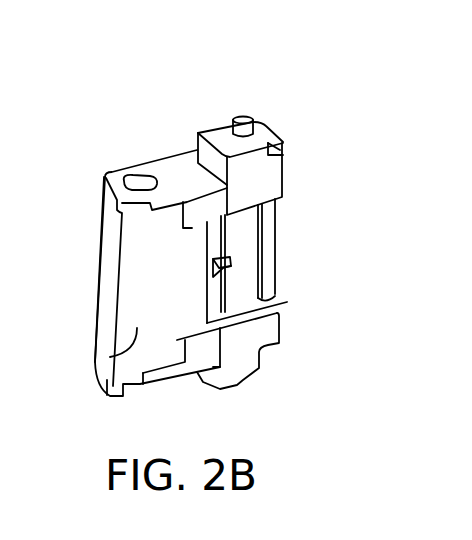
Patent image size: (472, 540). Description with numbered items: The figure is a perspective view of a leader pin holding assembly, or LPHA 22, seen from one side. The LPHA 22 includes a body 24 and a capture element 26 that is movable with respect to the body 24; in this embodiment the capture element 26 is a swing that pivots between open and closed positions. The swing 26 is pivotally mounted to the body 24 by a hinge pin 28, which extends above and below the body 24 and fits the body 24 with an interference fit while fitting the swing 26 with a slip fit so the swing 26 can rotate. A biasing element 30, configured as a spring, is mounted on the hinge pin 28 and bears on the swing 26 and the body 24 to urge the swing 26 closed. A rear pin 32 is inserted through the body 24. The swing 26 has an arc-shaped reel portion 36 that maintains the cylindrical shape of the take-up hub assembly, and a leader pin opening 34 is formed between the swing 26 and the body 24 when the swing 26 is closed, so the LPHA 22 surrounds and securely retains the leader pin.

The leader pin holding assembly 22 is at (302, 66).
The body 24 is at (175, 152).
The capture element 26 is at (97, 358).
The hinge pin 28 is at (244, 118).
The biasing element 30 is at (232, 263).
The rear pin 32 is at (277, 228).
The leader pin opening 34 is at (143, 178).
The reel portion 36 is at (97, 287).